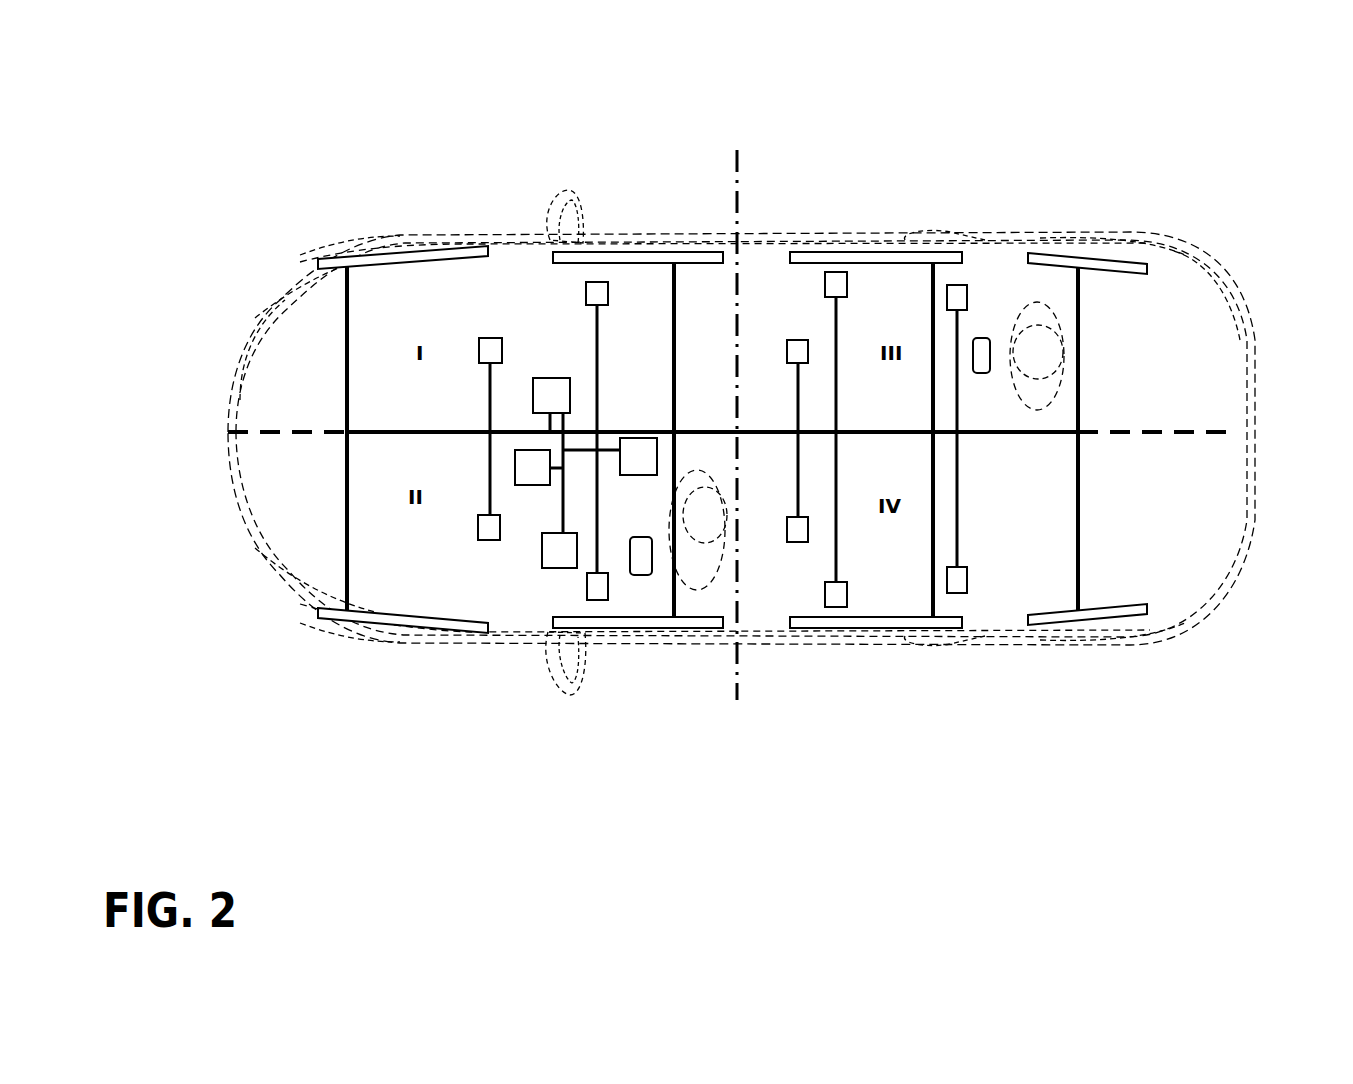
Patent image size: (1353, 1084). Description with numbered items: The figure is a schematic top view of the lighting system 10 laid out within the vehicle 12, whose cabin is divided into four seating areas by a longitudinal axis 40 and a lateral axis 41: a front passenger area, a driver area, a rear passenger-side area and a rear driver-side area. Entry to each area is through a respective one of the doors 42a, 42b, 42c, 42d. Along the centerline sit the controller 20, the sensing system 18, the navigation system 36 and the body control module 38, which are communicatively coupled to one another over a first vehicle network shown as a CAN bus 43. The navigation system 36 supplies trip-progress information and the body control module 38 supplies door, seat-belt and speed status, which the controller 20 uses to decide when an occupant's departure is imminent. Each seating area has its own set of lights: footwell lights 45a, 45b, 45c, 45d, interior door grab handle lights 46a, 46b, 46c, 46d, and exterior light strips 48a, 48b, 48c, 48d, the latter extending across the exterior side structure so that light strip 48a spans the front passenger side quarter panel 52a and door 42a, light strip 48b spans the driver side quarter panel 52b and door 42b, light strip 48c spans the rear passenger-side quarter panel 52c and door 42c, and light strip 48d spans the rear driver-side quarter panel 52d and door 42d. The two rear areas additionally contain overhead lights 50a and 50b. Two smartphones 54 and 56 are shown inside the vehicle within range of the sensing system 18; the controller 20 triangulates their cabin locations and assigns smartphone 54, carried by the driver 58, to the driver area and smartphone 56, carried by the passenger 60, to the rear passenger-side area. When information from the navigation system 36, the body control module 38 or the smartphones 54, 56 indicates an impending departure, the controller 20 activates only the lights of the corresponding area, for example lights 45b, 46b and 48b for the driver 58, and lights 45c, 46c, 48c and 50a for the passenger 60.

The lighting system 10 is at (1109, 159).
The vehicle 12 is at (250, 268).
The sensing system 18 is at (637, 440).
The controller 20 is at (548, 388).
The navigation system 36 is at (515, 463).
The body control module 38 is at (558, 568).
The longitudinal axis 40 is at (1192, 428).
The lateral axis 41 is at (733, 180).
The door 42a is at (622, 228).
The door 42b is at (622, 643).
The door 42c is at (918, 232).
The door 42d is at (923, 630).
The CAN bus 43 is at (562, 502).
The footwell light 45a is at (489, 338).
The footwell light 45b is at (478, 528).
The footwell light 45c is at (787, 350).
The footwell light 45d is at (808, 525).
The interior door grab handle light 46a is at (586, 295).
The interior door grab handle light 46b is at (588, 593).
The interior door grab handle light 46c is at (967, 293).
The interior door grab handle light 46d is at (960, 582).
The light strip 48a is at (400, 260).
The light strip 48b is at (420, 622).
The light strip 48c is at (893, 257).
The light strip 48d is at (903, 623).
The overhead light 50a is at (847, 280).
The overhead light 50b is at (842, 593).
The front passenger side quarter panel 52a is at (365, 228).
The driver side quarter panel 52b is at (387, 640).
The rear passenger-side quarter panel 52c is at (1085, 247).
The rear driver-side quarter panel 52d is at (1085, 630).
The smartphone 54 is at (642, 553).
The smartphone 56 is at (985, 338).
The driver 58 is at (763, 635).
The passenger 60 is at (1082, 357).